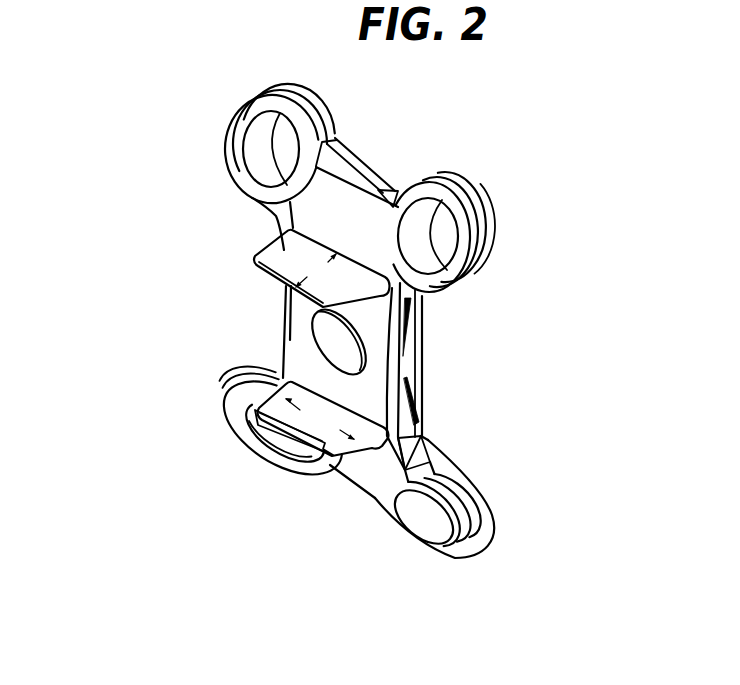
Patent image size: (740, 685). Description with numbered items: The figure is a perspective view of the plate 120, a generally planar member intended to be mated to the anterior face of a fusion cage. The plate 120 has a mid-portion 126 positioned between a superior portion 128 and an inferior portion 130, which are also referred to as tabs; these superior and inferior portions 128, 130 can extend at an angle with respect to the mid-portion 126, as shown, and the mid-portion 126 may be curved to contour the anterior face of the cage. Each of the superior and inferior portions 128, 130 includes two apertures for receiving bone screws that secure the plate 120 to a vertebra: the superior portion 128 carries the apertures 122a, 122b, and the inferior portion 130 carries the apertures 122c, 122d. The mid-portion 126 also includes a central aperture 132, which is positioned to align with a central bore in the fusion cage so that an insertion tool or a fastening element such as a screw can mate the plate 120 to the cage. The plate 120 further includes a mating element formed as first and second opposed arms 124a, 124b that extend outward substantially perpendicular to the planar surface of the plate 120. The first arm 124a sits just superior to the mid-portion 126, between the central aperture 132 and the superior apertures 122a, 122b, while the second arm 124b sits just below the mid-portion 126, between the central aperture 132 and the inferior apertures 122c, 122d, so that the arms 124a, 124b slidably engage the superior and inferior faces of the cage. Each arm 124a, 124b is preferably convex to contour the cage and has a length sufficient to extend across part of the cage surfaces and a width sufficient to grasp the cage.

The plate 120 is at (127, 128).
The aperture 122a is at (250, 110).
The aperture 122b is at (448, 204).
The aperture 122c is at (246, 440).
The aperture 122d is at (440, 548).
The first arm 124a is at (268, 264).
The second arm 124b is at (250, 398).
The mid-portion 126 is at (432, 303).
The superior portion 128 is at (503, 183).
The inferior portion 130 is at (493, 462).
The central aperture 132 is at (312, 337).